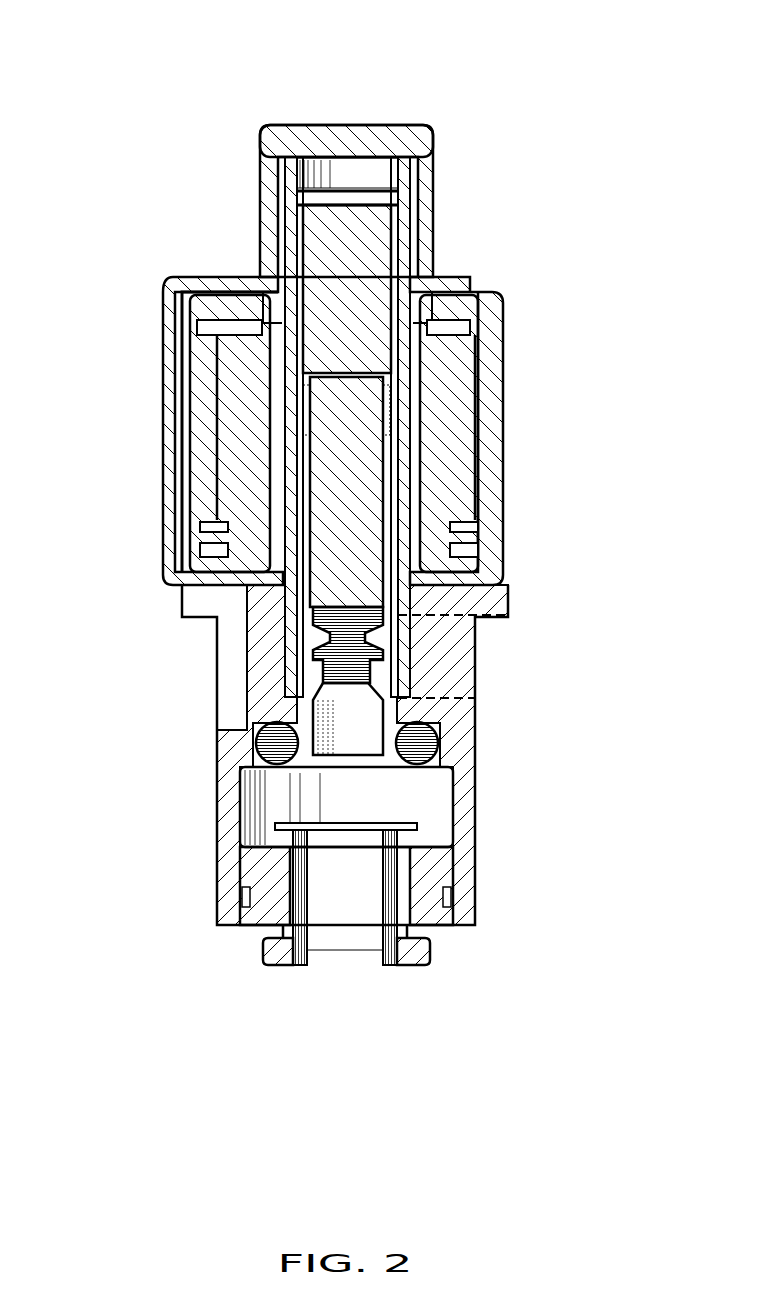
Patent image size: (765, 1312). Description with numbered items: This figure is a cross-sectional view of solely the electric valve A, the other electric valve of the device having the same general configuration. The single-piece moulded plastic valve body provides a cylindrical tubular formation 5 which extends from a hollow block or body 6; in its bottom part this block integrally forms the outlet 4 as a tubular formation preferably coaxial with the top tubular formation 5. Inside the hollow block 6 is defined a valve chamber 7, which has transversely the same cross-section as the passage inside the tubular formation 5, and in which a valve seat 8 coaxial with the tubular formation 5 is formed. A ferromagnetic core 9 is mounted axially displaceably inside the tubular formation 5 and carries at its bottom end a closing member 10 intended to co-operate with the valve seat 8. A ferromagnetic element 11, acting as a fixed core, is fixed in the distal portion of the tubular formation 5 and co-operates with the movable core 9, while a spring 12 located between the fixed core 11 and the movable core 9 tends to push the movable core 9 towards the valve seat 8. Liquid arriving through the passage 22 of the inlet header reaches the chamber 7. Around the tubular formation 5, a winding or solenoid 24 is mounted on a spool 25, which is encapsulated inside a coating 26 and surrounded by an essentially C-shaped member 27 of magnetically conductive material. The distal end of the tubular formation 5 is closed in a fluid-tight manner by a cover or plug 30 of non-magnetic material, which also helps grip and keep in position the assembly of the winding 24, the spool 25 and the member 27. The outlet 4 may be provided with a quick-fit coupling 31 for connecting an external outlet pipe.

The electric valve A is at (231, 190).
The outlet 4 is at (470, 928).
The tubular formation 5 is at (505, 465).
The hollow block or body 6 is at (462, 670).
The valve chamber 7 is at (320, 697).
The valve seat 8 is at (400, 677).
The ferromagnetic core 9 is at (423, 477).
The closing member 10 is at (230, 620).
The ferromagnetic element 11 is at (433, 248).
The spring 12 is at (340, 490).
The passage 22 is at (443, 717).
The winding or solenoid 24 is at (219, 277).
The spool 25 is at (500, 385).
The coating 26 is at (200, 380).
The member of magnetically conductive material 27 is at (157, 425).
The cover or plug 30 is at (357, 125).
The quick-fit coupling 31 is at (337, 940).